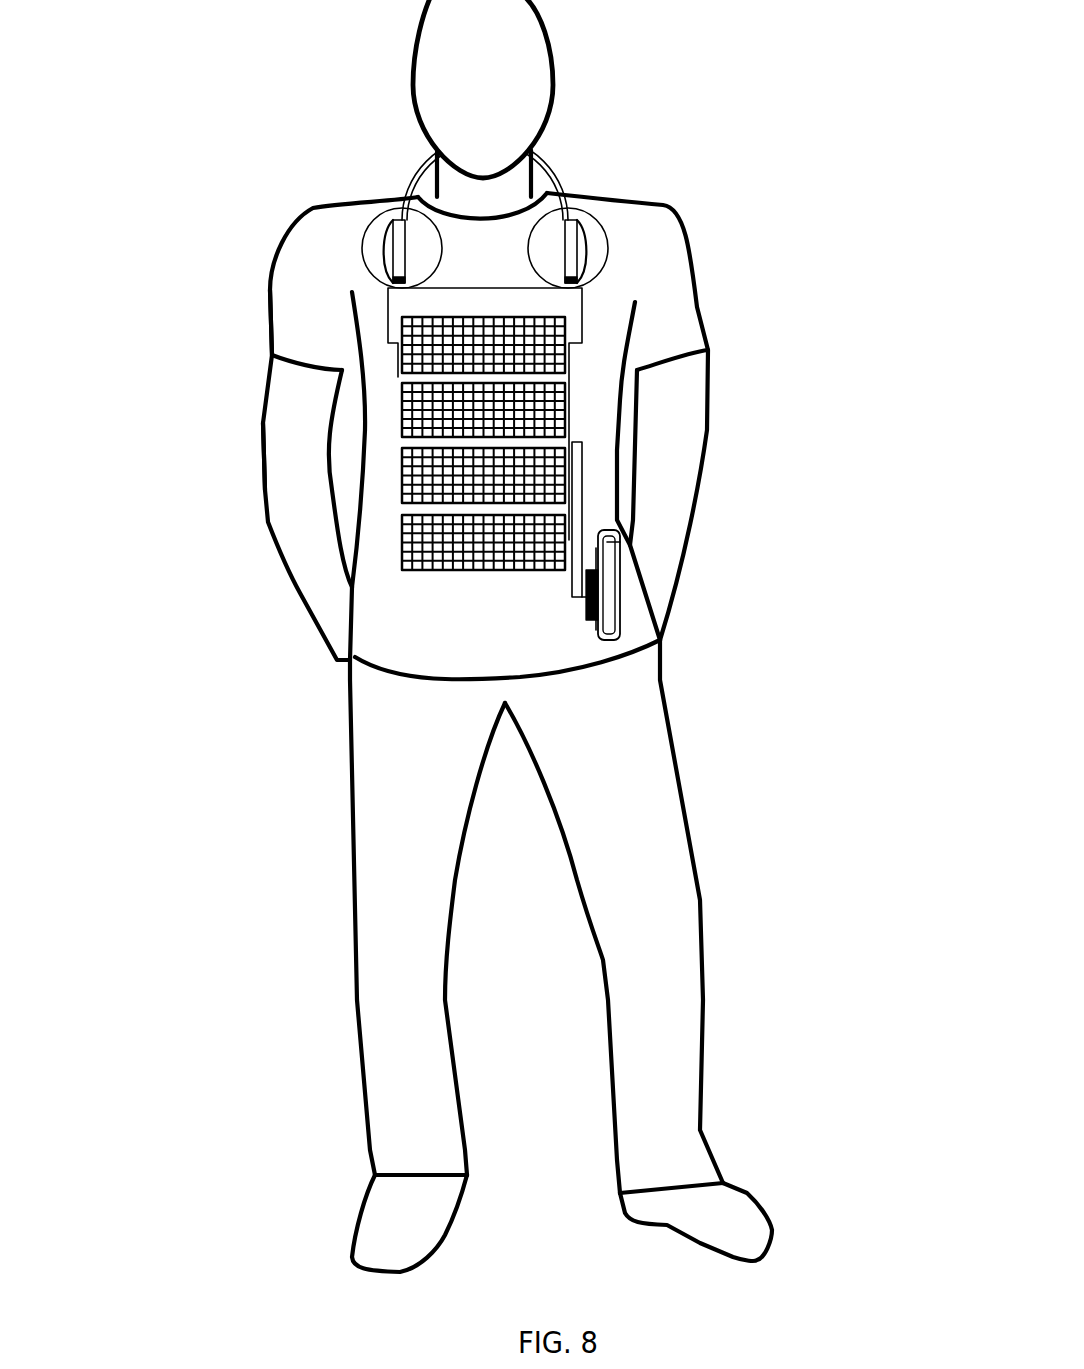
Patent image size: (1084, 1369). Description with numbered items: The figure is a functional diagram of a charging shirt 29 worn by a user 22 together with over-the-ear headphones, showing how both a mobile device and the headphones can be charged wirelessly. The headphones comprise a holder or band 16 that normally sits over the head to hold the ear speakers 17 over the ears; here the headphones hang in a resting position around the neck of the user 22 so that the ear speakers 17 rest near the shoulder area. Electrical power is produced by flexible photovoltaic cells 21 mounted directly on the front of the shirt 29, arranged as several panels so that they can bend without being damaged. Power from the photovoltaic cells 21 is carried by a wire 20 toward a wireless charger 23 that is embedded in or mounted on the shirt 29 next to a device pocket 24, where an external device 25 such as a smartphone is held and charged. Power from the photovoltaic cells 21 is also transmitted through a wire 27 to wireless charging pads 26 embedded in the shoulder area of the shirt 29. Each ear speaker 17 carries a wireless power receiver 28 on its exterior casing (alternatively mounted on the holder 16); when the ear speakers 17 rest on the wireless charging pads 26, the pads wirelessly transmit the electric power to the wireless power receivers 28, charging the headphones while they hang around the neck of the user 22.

The holder or band 16 is at (565, 169).
The ear speakers 17 is at (579, 227).
The wire 20 is at (573, 578).
The photovoltaic cells 21 is at (452, 541).
The user 22 is at (291, 476).
The wireless charger 23 is at (583, 612).
The device pocket 24 is at (622, 614).
The external device 25 is at (609, 543).
The wireless charging pads 26 is at (376, 216).
The wire 27 is at (380, 296).
The wireless power receivers 28 is at (383, 270).
The shirt 29 is at (318, 296).